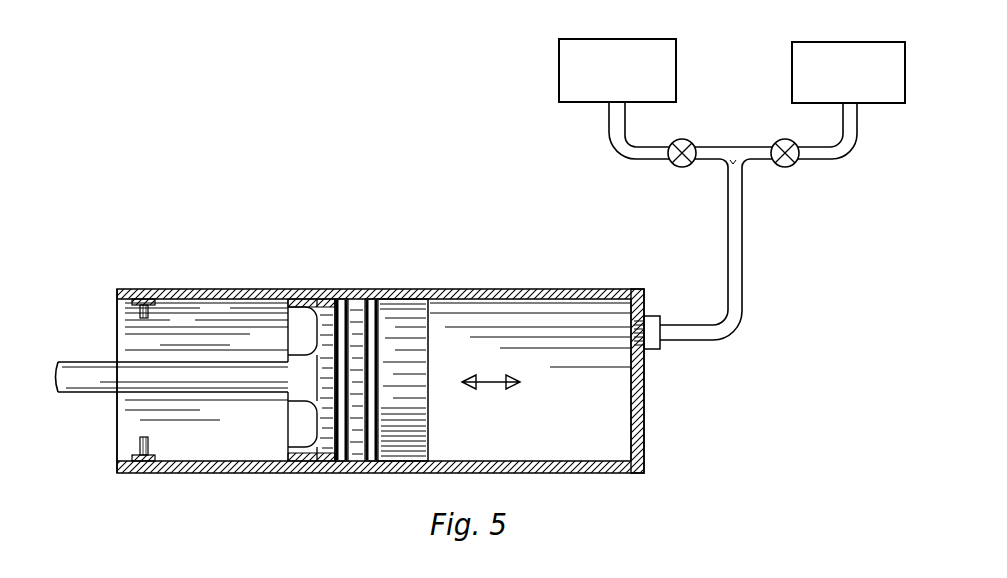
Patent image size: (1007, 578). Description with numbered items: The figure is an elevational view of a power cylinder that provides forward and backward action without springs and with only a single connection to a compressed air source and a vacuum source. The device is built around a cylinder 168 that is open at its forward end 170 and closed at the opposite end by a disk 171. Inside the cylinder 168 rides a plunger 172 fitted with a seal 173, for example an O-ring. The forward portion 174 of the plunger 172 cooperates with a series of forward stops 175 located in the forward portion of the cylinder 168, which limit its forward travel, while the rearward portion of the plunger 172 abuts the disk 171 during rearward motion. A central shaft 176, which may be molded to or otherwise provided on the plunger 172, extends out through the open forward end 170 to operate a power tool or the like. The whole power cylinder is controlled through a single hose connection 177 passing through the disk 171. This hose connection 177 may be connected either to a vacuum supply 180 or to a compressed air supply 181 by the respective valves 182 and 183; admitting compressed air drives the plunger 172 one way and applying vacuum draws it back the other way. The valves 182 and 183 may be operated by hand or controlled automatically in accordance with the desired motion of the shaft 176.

The cylinder 168 is at (218, 289).
The forward end 170 is at (117, 302).
The disk 171 is at (645, 406).
The plunger 172 is at (403, 304).
The seal 173 is at (342, 299).
The forward portion 174 is at (319, 300).
The forward stops 175 is at (154, 299).
The central shaft 176 is at (82, 362).
The hose connection 177 is at (742, 228).
The vacuum supply 180 is at (559, 67).
The compressed air supply 181 is at (792, 68).
The valve 182 is at (684, 139).
The valve 183 is at (778, 139).